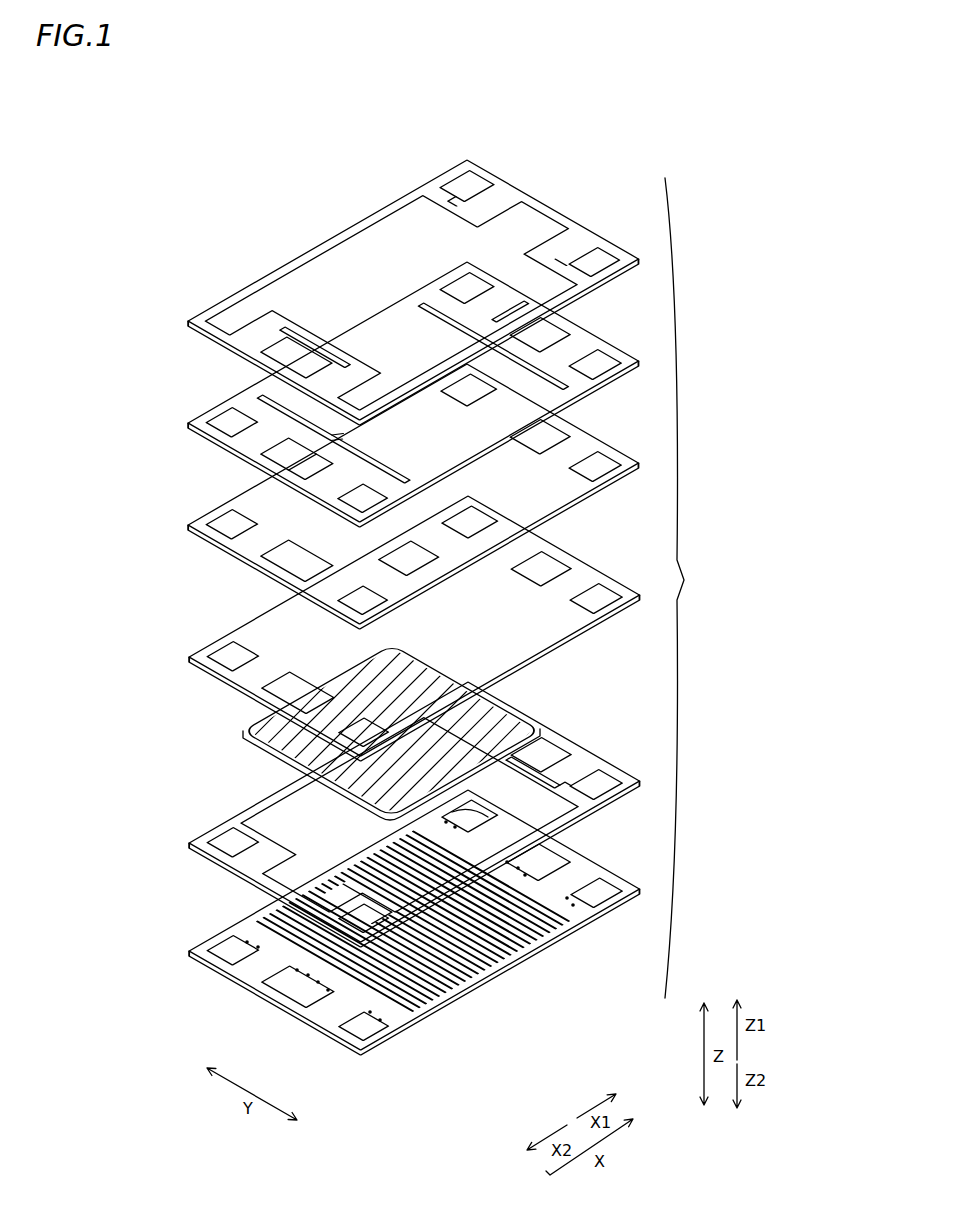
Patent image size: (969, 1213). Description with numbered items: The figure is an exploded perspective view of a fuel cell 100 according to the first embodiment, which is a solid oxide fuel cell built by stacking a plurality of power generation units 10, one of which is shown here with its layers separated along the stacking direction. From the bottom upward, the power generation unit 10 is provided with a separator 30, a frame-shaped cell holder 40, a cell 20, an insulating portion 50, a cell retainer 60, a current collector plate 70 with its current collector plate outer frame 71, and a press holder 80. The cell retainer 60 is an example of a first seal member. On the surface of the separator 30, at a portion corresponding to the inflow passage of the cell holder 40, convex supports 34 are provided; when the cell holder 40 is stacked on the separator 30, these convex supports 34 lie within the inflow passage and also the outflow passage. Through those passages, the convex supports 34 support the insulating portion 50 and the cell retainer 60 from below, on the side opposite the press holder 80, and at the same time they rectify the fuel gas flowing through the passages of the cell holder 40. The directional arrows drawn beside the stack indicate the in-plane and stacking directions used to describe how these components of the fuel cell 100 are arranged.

The fuel cell 100 is at (700, 114).
The power generation unit 10 is at (686, 580).
The press holder 80 is at (232, 296).
The current collector plate 70 is at (400, 352).
The current collector plate outer frame 71 is at (230, 407).
The cell retainer 60 is at (243, 505).
The insulating portion 50 is at (248, 625).
The cell 20 is at (248, 727).
The cell holder 40 is at (205, 832).
The separator 30 is at (210, 940).
The convex supports 34 is at (455, 815).